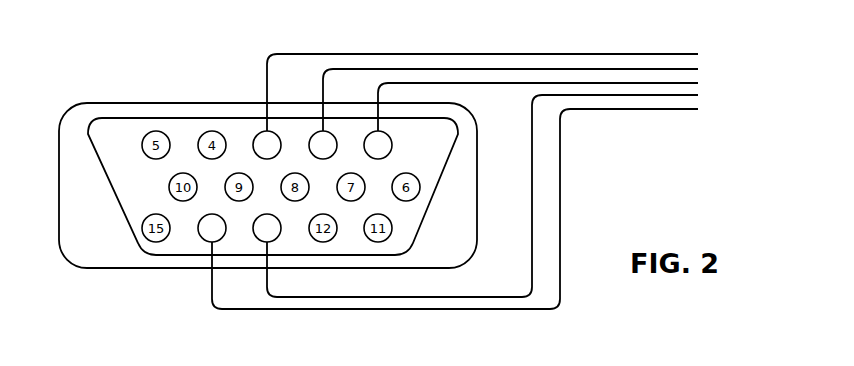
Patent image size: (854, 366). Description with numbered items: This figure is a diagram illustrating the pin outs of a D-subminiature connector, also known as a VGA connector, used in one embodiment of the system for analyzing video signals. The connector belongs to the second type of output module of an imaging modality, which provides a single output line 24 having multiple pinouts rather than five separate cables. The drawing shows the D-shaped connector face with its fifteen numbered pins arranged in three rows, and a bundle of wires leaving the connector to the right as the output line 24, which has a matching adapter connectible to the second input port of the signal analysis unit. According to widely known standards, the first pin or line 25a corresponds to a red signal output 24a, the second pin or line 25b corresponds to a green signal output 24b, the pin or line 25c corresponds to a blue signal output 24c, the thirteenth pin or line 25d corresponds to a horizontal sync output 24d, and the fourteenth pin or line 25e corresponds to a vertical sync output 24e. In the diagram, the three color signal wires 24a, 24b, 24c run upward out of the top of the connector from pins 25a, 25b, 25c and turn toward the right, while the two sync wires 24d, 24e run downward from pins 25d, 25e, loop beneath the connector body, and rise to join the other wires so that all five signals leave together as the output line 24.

The output line 24 is at (716, 91).
The red signal output 24a is at (498, 83).
The green signal output 24b is at (362, 69).
The blue signal output 24c is at (278, 54).
The horizontal sync output 24d is at (360, 297).
The vertical sync output 24e is at (320, 309).
The first pin or line 25a is at (368, 134).
The second pin or line 25b is at (313, 134).
The fourth pin or line 25c is at (257, 134).
The thirteenth pin or line 25d is at (256, 240).
The fourteenth pin or line 25e is at (200, 239).